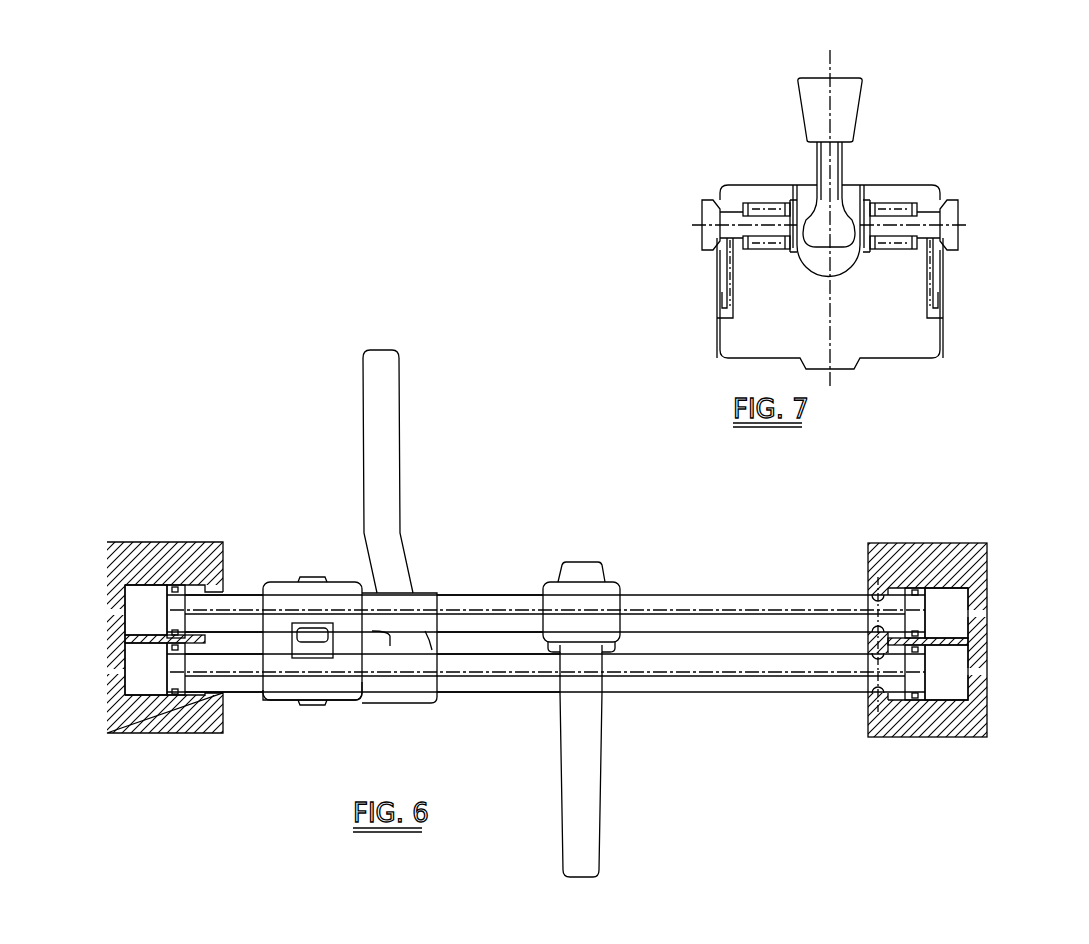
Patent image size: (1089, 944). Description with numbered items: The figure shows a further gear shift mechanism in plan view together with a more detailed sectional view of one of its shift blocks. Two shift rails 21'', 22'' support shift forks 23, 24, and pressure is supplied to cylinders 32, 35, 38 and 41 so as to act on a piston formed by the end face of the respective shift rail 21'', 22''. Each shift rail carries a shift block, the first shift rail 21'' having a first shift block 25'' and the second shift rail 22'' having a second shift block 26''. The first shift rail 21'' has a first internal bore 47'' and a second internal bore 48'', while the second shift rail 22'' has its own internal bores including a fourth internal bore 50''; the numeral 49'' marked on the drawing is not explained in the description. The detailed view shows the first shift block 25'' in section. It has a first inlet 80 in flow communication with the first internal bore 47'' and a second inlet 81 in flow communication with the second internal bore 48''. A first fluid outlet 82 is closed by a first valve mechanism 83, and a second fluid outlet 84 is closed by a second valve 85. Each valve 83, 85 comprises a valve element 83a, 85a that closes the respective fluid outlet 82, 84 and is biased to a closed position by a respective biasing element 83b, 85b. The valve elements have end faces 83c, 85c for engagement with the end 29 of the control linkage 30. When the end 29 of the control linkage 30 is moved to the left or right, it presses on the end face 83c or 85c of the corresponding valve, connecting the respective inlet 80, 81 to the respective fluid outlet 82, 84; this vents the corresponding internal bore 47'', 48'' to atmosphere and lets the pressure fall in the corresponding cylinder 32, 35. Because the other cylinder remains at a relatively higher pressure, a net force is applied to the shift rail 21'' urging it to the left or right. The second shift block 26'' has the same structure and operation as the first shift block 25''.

In FIG. 6, the first shift rail 21'' is at (546, 577).
In FIG. 6, the second shift rail 22'' is at (546, 718).
In FIG. 6, the shift fork 23 is at (393, 418).
In FIG. 6, the shift fork 24 is at (594, 843).
In FIG. 7, the first shift block 25'' is at (862, 243).
In FIG. 6, the first shift block 25'' is at (312, 613).
In FIG. 6, the second shift block 26'' is at (334, 720).
In FIG. 6, the cylinder 32 is at (147, 598).
In FIG. 6, the cylinder 35 is at (937, 598).
In FIG. 6, the cylinder 38 is at (145, 690).
In FIG. 6, the cylinder 41 is at (940, 692).
In FIG. 6, the first internal bore 47'' is at (546, 580).
In FIG. 6, the second internal bore 48'' is at (490, 576).
In FIG. 6, the lower rod end 49'' is at (546, 700).
In FIG. 6, the fourth internal bore 50'' is at (498, 700).
In FIG. 7, the end of the control linkage 29 is at (838, 238).
In FIG. 7, the control linkage 30 is at (840, 143).
In FIG. 7, the first inlet 80 is at (723, 296).
In FIG. 7, the second inlet 81 is at (932, 294).
In FIG. 7, the first fluid outlet 82 is at (721, 192).
In FIG. 7, the first valve mechanism 83 is at (703, 223).
In FIG. 7, the valve element 83a is at (735, 228).
In FIG. 7, the biasing element 83b is at (766, 210).
In FIG. 7, the end face 83c is at (792, 200).
In FIG. 7, the second fluid outlet 84 is at (939, 203).
In FIG. 7, the second valve 85 is at (962, 245).
In FIG. 7, the valve element 85a is at (932, 223).
In FIG. 7, the biasing element 85b is at (887, 205).
In FIG. 7, the end face 85c is at (866, 190).